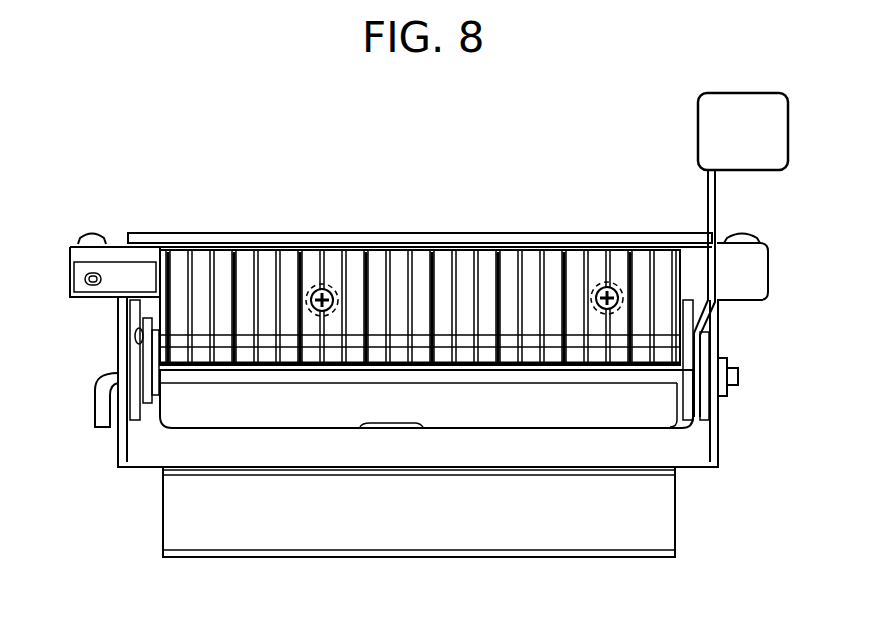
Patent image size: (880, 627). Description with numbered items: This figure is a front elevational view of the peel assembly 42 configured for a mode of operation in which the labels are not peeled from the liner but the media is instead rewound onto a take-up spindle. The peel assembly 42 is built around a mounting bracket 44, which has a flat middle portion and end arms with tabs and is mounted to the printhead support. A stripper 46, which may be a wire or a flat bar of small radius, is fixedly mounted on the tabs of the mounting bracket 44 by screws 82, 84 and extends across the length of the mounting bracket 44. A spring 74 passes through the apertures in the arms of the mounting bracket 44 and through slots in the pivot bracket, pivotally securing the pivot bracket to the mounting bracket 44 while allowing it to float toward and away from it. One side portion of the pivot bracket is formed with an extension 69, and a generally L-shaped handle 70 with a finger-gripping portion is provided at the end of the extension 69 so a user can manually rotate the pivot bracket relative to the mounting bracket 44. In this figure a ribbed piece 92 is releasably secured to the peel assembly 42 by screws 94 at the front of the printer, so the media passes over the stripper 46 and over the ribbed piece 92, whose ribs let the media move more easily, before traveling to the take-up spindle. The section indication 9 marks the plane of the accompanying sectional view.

The section line 9- 9 is at (213, 133).
The peel assembly 42 is at (462, 201).
The mounting bracket 44 is at (545, 528).
The stripper 46 is at (370, 232).
The extension 69 is at (717, 194).
The handle 70 is at (738, 113).
The spring 74 is at (97, 400).
The screw 82 is at (92, 238).
The screw 84 is at (745, 236).
The ribbed piece 92 is at (548, 290).
The screws 94 is at (318, 284).